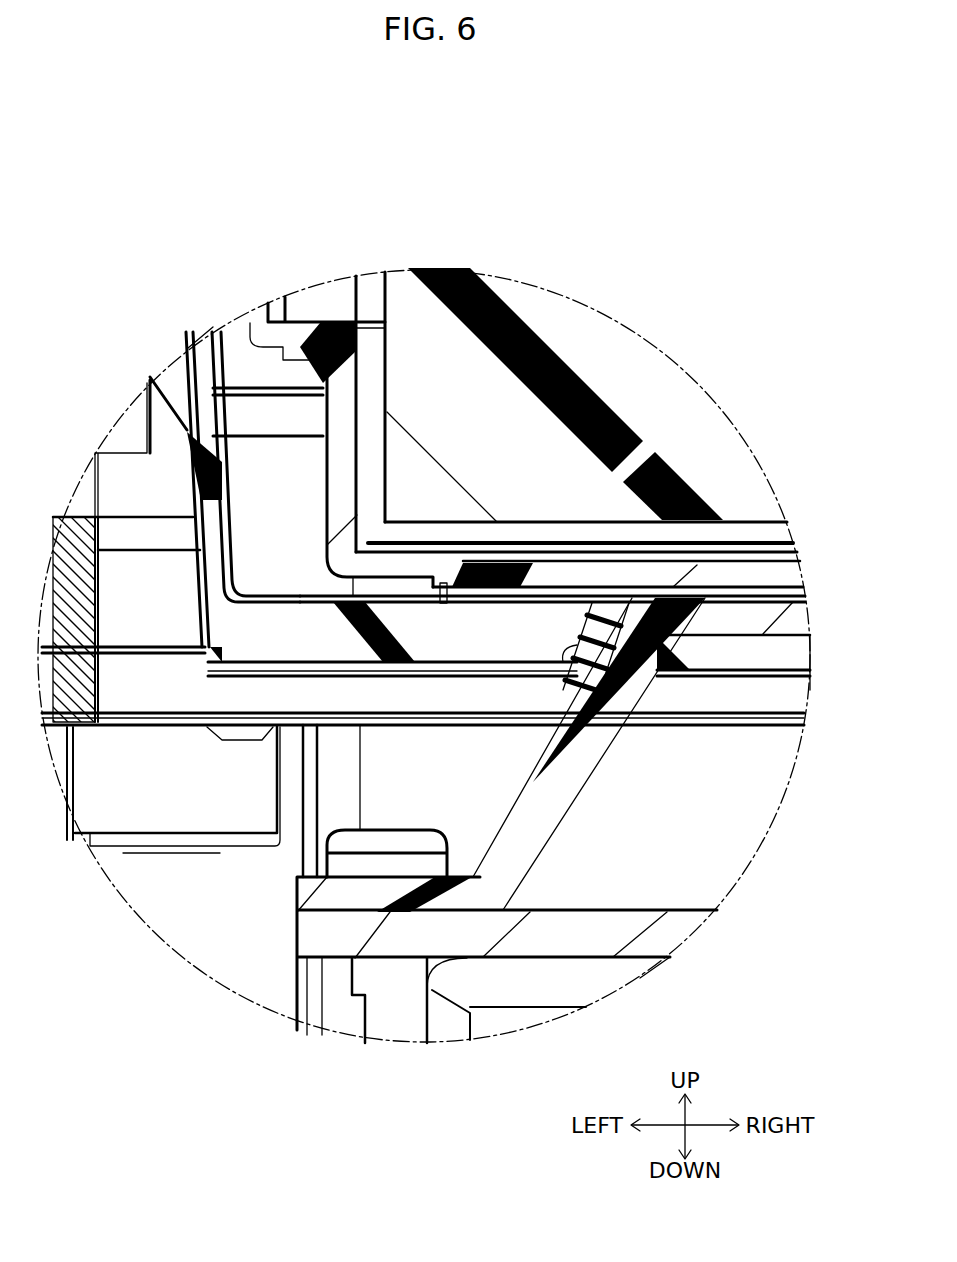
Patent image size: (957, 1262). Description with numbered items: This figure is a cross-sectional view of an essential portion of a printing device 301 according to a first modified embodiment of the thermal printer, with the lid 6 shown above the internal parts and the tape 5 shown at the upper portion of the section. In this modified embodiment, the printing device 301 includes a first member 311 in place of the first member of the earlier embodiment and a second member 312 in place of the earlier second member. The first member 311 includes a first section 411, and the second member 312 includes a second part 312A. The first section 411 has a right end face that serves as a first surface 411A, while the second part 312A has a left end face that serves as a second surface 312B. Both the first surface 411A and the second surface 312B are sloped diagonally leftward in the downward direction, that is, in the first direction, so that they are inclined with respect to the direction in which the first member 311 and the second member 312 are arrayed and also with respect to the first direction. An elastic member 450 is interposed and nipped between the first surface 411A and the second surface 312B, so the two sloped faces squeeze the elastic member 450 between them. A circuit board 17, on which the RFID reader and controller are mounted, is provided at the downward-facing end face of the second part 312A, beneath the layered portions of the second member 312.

The printing device 301 is at (418, 184).
The lid 6 is at (306, 492).
The tape 5 is at (587, 347).
The elastic member 450 is at (602, 620).
The second surface 312B is at (650, 546).
The second part 312A is at (733, 622).
The circuit board 17 is at (757, 653).
The second member 312 is at (583, 777).
The first member 311 is at (244, 630).
The first section 411 is at (540, 712).
The first surface 411A is at (450, 627).